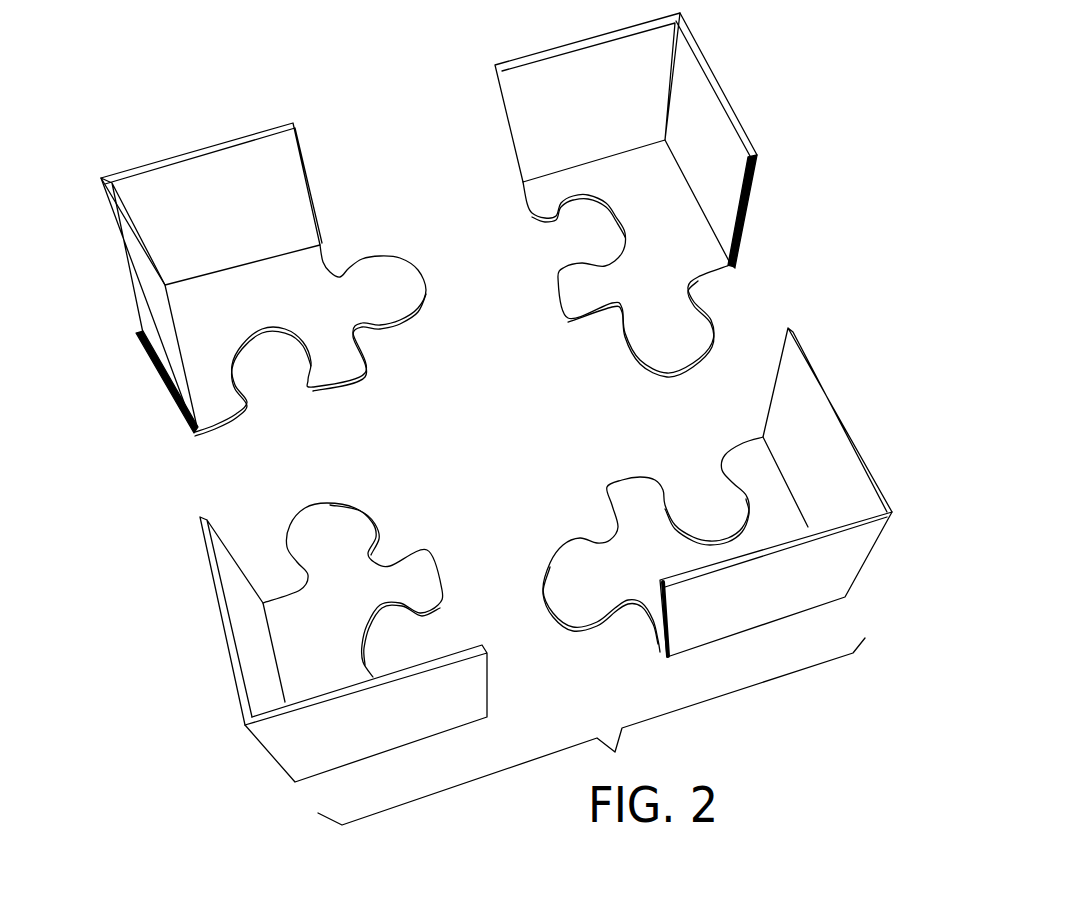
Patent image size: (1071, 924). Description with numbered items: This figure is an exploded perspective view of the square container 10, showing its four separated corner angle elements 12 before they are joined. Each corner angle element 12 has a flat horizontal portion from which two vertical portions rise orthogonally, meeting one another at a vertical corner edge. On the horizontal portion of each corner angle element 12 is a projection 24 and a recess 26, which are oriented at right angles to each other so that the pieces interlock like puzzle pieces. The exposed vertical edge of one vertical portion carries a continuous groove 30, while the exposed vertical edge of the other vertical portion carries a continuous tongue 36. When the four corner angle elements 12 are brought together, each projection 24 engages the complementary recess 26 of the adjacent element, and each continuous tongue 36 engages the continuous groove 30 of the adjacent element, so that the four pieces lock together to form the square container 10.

The square container 10 is at (818, 124).
The corner angle element 12 is at (128, 282).
The projection 24 is at (385, 287).
The recess 26 is at (288, 333).
The continuous groove 30 is at (167, 392).
The continuous tongue 36 is at (307, 172).